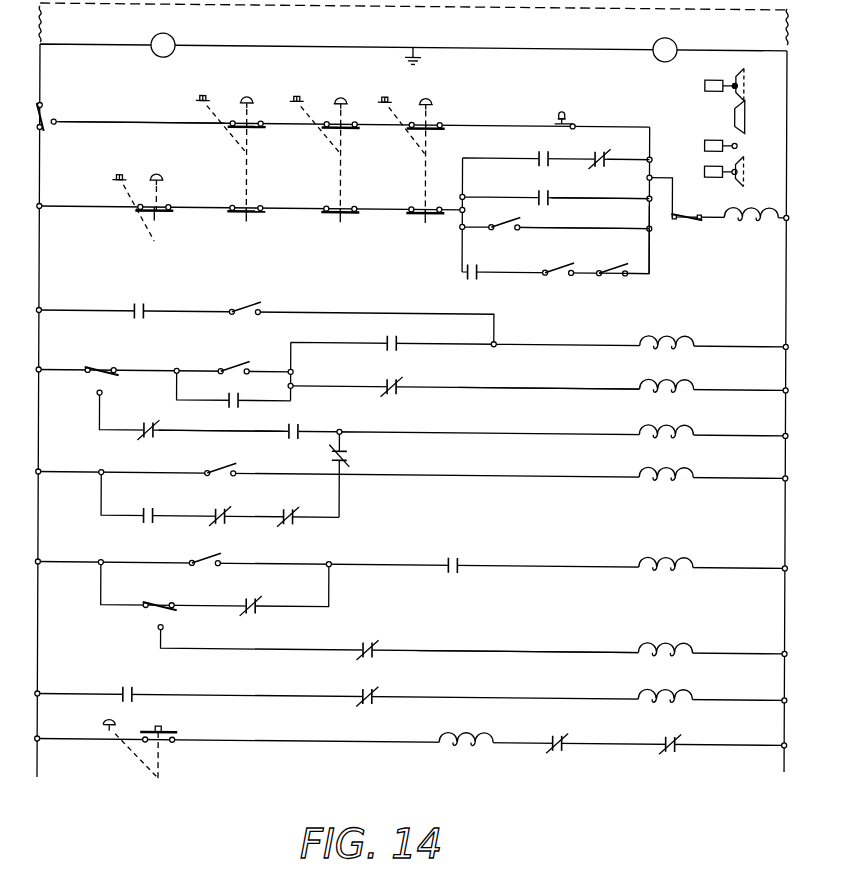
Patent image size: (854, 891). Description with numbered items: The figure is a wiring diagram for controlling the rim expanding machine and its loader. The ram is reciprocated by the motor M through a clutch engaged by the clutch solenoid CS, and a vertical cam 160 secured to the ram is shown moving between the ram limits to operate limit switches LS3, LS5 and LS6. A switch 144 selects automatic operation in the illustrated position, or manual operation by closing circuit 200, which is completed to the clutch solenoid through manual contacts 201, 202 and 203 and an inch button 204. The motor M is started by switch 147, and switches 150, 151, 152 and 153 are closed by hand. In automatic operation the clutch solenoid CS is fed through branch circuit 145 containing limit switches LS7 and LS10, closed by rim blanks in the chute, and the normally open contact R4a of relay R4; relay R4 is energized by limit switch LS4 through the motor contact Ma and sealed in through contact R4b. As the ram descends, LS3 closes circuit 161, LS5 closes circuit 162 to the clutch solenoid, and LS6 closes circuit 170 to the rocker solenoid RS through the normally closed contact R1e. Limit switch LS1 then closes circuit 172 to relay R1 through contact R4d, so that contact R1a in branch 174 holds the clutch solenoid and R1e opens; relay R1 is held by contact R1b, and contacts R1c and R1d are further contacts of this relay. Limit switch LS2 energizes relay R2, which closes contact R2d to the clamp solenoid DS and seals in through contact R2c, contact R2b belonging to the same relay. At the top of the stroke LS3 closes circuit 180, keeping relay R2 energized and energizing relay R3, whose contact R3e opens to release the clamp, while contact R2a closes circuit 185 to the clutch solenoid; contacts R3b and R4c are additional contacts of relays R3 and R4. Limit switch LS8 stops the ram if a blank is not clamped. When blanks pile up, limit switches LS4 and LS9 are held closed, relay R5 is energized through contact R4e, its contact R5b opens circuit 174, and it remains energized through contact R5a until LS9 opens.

The switch 144 is at (46, 112).
The circuit 200 is at (148, 113).
The manual contact 201 is at (250, 120).
The manual contact 202 is at (342, 120).
The manual contact 203 is at (430, 122).
The inch button 204 is at (576, 121).
The switch 150 is at (166, 212).
The switch 151 is at (248, 212).
The switch 152 is at (344, 212).
The switch 153 is at (424, 212).
The circuit branch 174 is at (628, 160).
The circuit 185 is at (611, 198).
The circuit 162 is at (596, 228).
The branch circuit 145 is at (652, 270).
The cam 160 is at (745, 114).
The circuit 161 is at (178, 368).
The circuit 180 is at (185, 432).
The circuit 172 is at (548, 383).
The circuit 170 is at (574, 648).
The switch 147 is at (174, 732).
The contact of relay R1 R1a is at (539, 154).
The contact of relay R5 R5b is at (598, 154).
The contact of relay R2 R2a is at (539, 192).
The limit switch LS5 is at (712, 136).
The contact of relay R4 R4a is at (481, 276).
The limit switch LS10 is at (554, 258).
The limit switch LS7 is at (613, 258).
The limit switch LS8 is at (696, 222).
The clutch solenoid CS is at (746, 222).
The limit switch LS3 is at (705, 87).
The limit switch LS6 is at (710, 170).
The contact of relay R5 R5a is at (148, 302).
The limit switch LS9 is at (252, 300).
The contact of relay R4 R4e is at (400, 337).
The relay R5 is at (694, 338).
The limit switch LS1 is at (234, 362).
The contact of relay R4 R4d is at (406, 381).
The relay R1 is at (694, 383).
The contact of relay R1 R1b is at (240, 398).
The contact of relay R1 R1c is at (150, 424).
The contact of relay R2 R2b is at (304, 426).
The relay R3 is at (694, 428).
The contact of relay R1 R1d is at (354, 455).
The limit switch LS2 is at (228, 458).
The relay R2 is at (694, 471).
The contact of relay R2 R2c is at (155, 510).
The contact of relay R3 R3b is at (229, 510).
The contact of relay R4 R4c is at (296, 510).
The limit switch LS4 is at (206, 552).
The contact of motor coil Ma is at (462, 558).
The relay R4 is at (689, 559).
The contact of relay R4 R4b is at (262, 606).
The contact of relay R1 R1e is at (380, 646).
The rocker solenoid RS is at (687, 646).
The contact of relay R2 R2d is at (140, 690).
The contact of relay R3 R3e is at (382, 692).
The clamp solenoid DS is at (687, 693).
The motor M is at (468, 748).